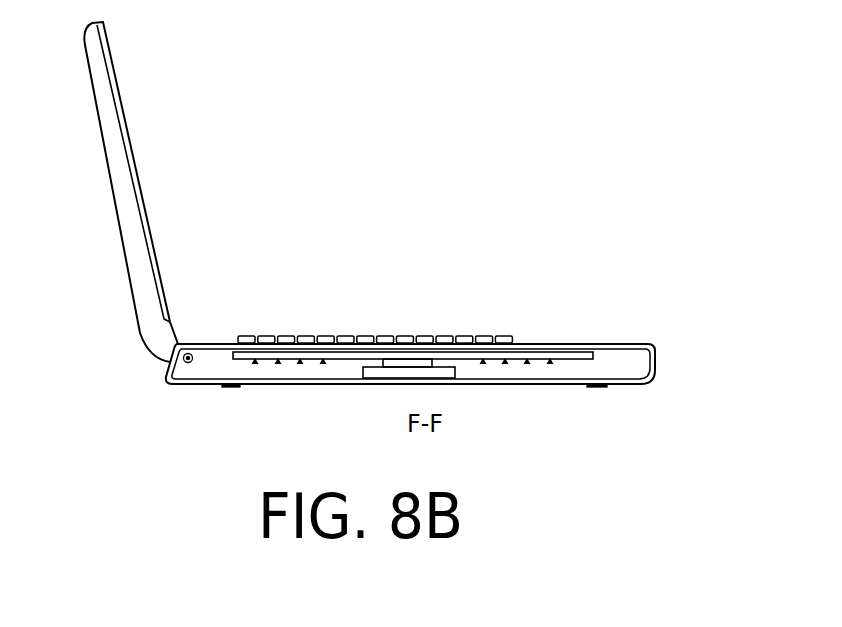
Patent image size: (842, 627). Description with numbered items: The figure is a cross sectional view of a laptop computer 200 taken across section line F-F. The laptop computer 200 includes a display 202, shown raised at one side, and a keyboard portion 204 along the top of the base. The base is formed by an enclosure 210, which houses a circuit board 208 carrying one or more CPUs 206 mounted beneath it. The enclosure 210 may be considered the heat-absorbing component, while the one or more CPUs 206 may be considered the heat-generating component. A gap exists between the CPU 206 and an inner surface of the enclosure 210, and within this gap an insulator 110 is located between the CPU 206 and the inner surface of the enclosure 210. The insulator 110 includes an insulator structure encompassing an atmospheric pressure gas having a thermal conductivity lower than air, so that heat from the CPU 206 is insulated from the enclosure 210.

The laptop computer 200 is at (442, 74).
The display 202 is at (160, 192).
The keyboard portion 204 is at (375, 308).
The CPU 206 is at (402, 365).
The circuit board 208 is at (516, 357).
The enclosure 210 is at (366, 383).
The insulator 110 is at (438, 372).